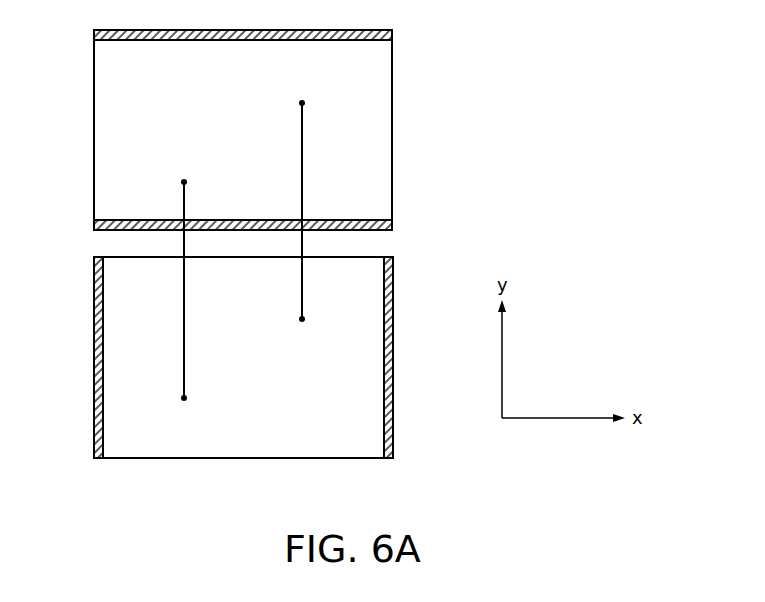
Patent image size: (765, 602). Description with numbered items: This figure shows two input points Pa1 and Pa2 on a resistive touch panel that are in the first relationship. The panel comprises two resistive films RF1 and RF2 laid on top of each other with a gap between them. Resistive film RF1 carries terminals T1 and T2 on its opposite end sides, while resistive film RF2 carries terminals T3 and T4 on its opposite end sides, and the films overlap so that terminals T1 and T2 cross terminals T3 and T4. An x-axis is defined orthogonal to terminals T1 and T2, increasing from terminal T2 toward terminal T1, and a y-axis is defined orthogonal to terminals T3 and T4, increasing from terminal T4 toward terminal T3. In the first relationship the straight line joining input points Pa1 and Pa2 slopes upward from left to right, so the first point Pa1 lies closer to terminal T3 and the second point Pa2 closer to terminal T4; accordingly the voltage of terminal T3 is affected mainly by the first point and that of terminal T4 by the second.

The resistive film RF2 is at (276, 131).
The terminal T3 is at (392, 33).
The terminal T4 is at (392, 228).
The resistive film RF1 is at (244, 381).
The terminal T1 is at (393, 445).
The terminal T2 is at (94, 447).
The input point Pa1 is at (303, 198).
The input point Pa2 is at (185, 277).